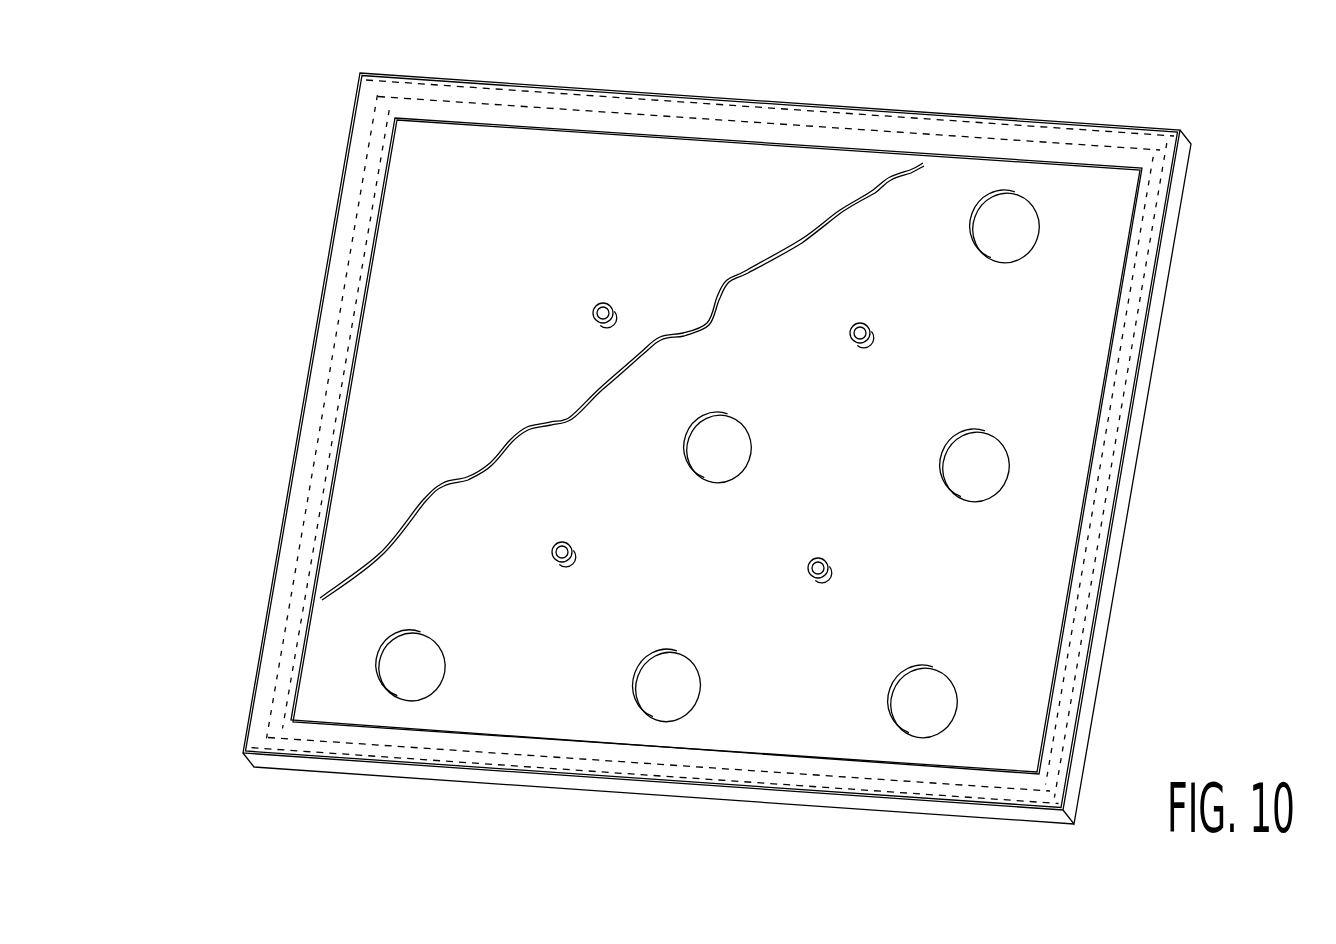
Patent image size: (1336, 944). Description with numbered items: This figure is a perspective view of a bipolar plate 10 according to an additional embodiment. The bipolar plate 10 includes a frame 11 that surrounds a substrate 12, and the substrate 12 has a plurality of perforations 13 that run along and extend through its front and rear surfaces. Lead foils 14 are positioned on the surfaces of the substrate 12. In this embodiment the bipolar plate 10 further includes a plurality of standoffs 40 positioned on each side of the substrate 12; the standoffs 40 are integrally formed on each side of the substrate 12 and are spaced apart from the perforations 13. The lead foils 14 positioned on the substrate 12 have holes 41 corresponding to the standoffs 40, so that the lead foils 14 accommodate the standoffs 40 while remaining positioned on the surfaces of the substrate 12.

The bipolar plate 10 is at (236, 126).
The frame 11 is at (1135, 127).
The substrate 12 is at (1030, 356).
The perforations 13 is at (1023, 233).
The lead foils 14 is at (472, 304).
The standoffs 40 is at (607, 288).
The holes 41 is at (612, 331).